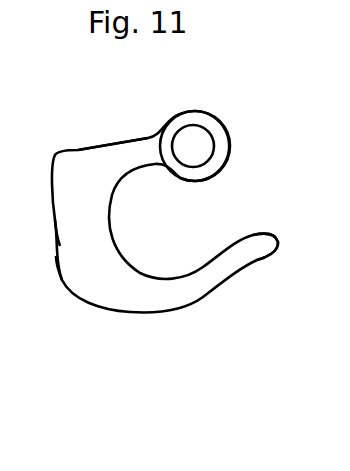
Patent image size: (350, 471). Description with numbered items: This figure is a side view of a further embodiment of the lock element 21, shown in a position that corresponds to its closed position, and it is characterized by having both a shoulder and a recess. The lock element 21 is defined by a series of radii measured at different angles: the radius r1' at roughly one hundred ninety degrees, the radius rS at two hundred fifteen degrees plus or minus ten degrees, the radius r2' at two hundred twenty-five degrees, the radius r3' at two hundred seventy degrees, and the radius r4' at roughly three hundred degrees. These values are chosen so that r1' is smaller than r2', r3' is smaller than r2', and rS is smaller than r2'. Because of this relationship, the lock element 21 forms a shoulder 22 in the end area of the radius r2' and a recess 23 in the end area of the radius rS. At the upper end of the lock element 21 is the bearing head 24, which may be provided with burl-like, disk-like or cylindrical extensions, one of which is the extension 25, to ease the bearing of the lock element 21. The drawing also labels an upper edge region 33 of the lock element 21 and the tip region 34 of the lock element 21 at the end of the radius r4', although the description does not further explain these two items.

The lock element 21 is at (118, 313).
The shoulder 22 is at (60, 281).
The recess 23 is at (63, 243).
The bearing head 24 is at (182, 112).
The extension 25 is at (203, 135).
The upper edge 33 is at (78, 149).
The hook tip 34 is at (279, 247).
The radius r1' is at (74, 179).
The radius rs rS is at (65, 243).
The radius r2' is at (86, 266).
The radius r3' is at (184, 271).
The radius r4' is at (245, 231).